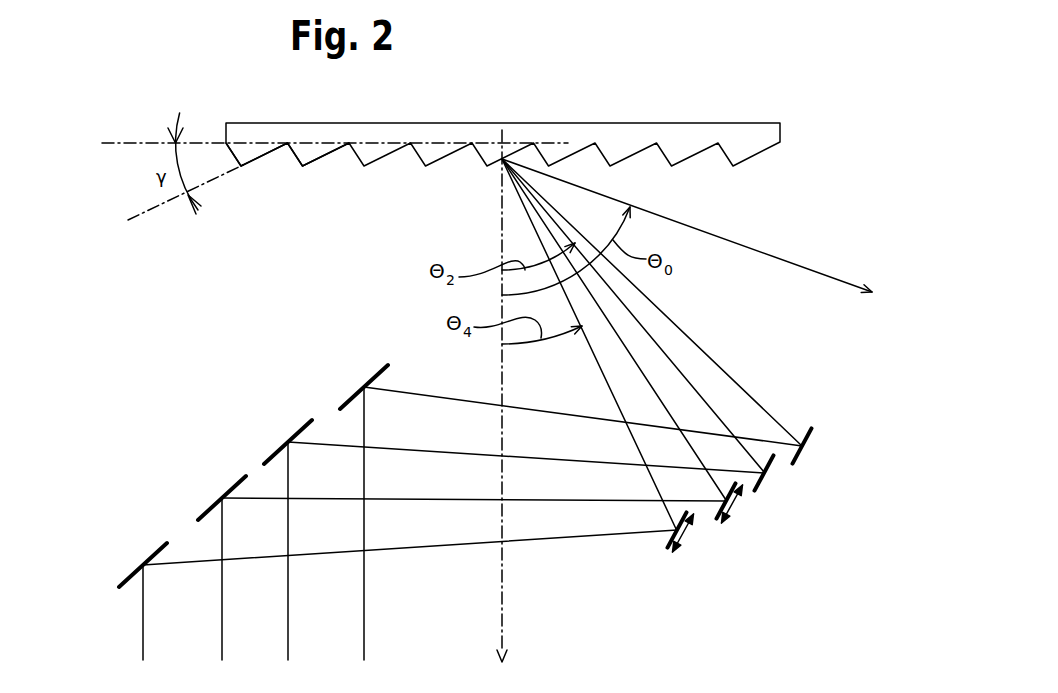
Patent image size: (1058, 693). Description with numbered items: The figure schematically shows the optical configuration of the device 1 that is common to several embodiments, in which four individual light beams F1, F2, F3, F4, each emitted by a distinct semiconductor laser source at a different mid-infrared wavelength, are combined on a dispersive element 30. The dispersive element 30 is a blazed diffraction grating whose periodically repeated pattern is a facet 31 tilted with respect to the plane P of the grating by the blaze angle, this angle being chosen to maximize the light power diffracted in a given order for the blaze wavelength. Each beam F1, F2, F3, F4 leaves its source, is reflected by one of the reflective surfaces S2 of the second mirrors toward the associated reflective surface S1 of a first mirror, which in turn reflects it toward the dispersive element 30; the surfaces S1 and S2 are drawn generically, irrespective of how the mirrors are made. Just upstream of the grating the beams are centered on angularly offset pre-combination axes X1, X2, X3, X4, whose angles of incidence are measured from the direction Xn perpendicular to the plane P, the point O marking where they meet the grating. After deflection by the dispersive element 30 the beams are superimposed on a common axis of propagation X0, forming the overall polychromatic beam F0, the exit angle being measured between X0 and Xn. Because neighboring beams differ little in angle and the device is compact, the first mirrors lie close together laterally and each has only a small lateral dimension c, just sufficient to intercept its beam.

The device 1 is at (817, 155).
The dispersive element 30 is at (622, 138).
The facet 31 is at (258, 158).
The plane of the grating P is at (122, 144).
The origin point on grating O is at (500, 162).
The common axis of propagation X0 is at (727, 239).
The pre-combination axis of propagation X1 is at (717, 358).
The pre-combination axis of propagation X2 is at (722, 418).
The pre-combination axis of propagation X3 is at (640, 367).
The pre-combination axis of propagation X4 is at (612, 395).
The direction perpendicular to the grating plane Xn is at (532, 663).
The overall polychromatic light beam F0 is at (806, 259).
The light beam F1 is at (372, 630).
The light beam F2 is at (300, 602).
The light beam F3 is at (214, 611).
The light beam F4 is at (132, 641).
The reflective surfaces of the first mirrors S1 is at (812, 445).
The reflective surfaces of the second mirrors S2 is at (377, 373).
The lateral dimension of the mirror c is at (733, 504).